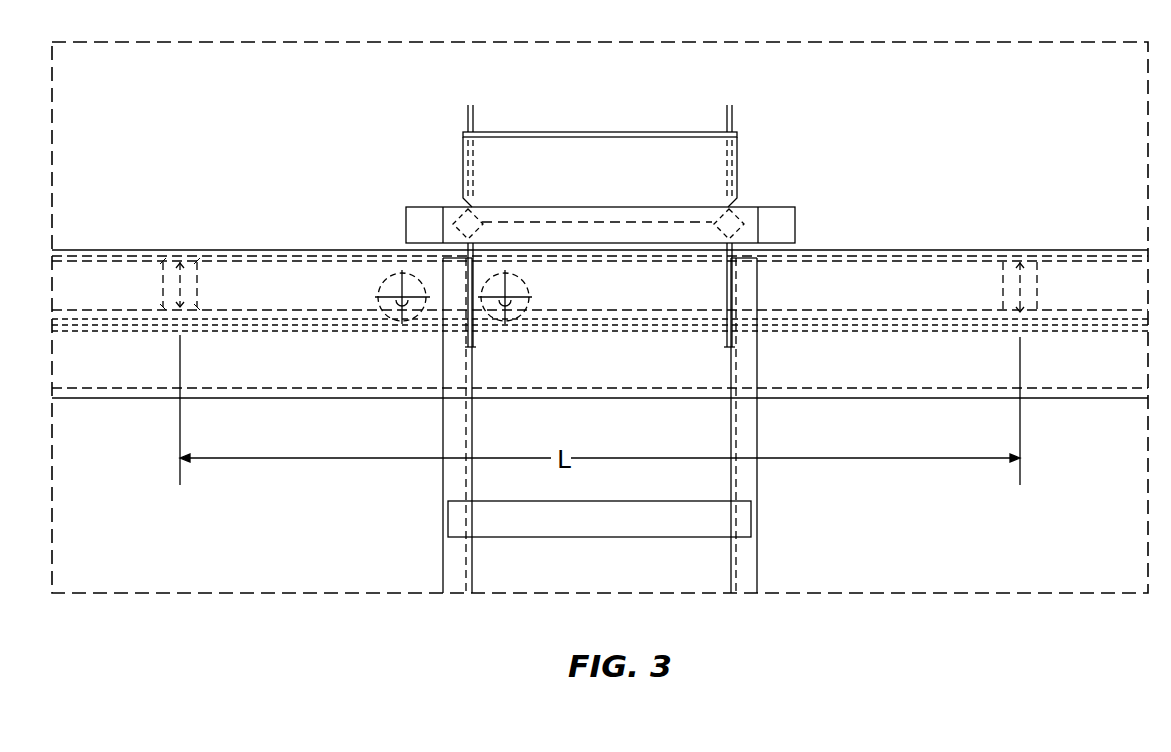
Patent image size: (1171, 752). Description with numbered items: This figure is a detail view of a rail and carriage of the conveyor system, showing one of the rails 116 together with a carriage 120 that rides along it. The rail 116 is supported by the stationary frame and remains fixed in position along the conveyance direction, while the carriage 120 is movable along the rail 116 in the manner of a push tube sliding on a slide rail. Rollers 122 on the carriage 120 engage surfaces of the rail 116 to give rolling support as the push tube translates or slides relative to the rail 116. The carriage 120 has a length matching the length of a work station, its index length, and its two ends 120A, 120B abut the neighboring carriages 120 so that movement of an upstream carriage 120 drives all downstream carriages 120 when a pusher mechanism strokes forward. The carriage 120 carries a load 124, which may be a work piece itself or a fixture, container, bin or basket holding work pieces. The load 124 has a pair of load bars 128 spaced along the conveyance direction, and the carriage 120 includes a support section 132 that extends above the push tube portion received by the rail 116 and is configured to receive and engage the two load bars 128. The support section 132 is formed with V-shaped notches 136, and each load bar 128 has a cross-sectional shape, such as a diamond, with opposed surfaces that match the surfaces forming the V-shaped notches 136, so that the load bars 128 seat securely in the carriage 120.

The rail 116 is at (1093, 252).
The carriage 120 is at (110, 273).
The carriage end 120A is at (188, 275).
The carriage end 120B is at (1012, 272).
The roller 122 is at (384, 315).
The load 124 is at (748, 553).
The load bar 128 is at (468, 212).
The support section 132 is at (782, 215).
The V-shaped notch 136 is at (462, 214).